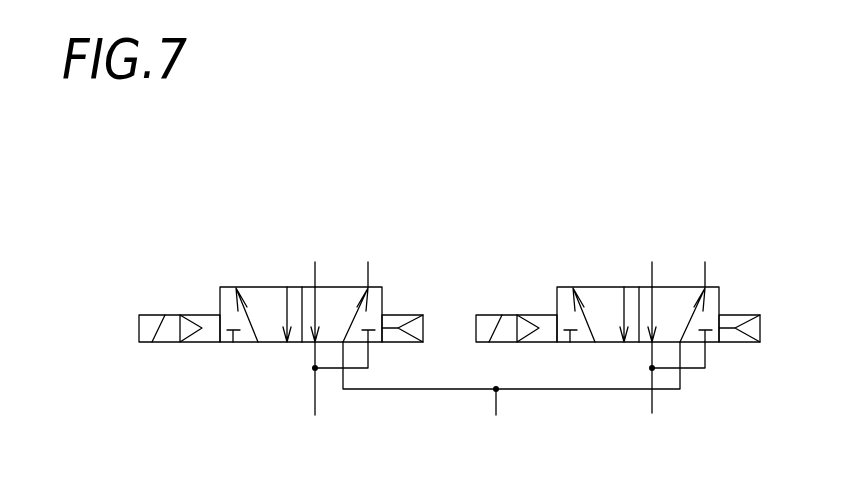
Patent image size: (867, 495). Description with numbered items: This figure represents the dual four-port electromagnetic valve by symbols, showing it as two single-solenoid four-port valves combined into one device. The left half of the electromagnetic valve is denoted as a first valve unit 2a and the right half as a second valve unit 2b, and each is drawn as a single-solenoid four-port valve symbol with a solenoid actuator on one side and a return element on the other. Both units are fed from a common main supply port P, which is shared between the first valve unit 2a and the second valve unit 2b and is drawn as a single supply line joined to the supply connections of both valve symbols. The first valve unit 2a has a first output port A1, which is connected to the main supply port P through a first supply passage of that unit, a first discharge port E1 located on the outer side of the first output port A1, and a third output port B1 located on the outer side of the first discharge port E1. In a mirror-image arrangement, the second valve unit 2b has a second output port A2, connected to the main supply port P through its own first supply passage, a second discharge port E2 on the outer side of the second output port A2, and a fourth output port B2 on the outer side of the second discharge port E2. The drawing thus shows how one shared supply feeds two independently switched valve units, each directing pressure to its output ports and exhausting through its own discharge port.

The first valve unit 2a is at (245, 235).
The second valve unit 2b is at (595, 233).
The third output port B1 is at (315, 252).
The first output port A1 is at (348, 293).
The first discharge port E1 is at (311, 400).
The main supply port P is at (511, 400).
The fourth output port B2 is at (652, 252).
The second output port A2 is at (687, 293).
The second discharge port E2 is at (653, 400).